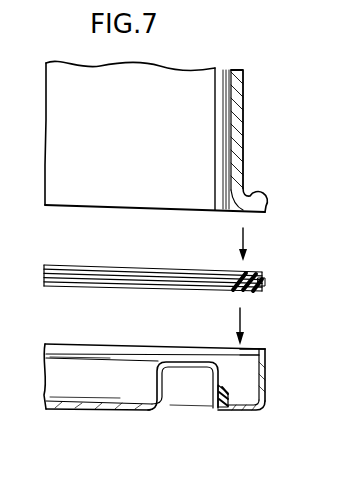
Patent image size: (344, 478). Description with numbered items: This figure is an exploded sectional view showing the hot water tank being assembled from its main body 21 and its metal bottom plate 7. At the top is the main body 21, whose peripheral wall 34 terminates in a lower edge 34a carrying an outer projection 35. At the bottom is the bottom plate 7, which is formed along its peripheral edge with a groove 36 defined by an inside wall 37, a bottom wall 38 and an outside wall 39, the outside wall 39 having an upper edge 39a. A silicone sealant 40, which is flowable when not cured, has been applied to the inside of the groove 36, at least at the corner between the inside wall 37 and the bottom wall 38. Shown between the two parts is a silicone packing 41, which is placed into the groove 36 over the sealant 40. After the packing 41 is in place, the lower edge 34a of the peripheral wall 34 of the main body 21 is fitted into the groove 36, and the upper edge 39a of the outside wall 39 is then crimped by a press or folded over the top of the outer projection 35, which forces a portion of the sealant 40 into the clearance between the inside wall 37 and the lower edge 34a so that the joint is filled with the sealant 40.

The main body 21 is at (238, 99).
The peripheral wall 34 is at (237, 128).
The lower edge 34a is at (235, 192).
The outer projection 35 is at (262, 198).
The silicone packing 41 is at (252, 273).
The groove 36 is at (243, 380).
The upper edge 39a is at (267, 353).
The outside wall 39 is at (266, 378).
The metal bottom plate 7 is at (97, 411).
The inside wall 37 is at (210, 380).
The silicone sealant 40 is at (221, 411).
The bottom wall 38 is at (250, 412).